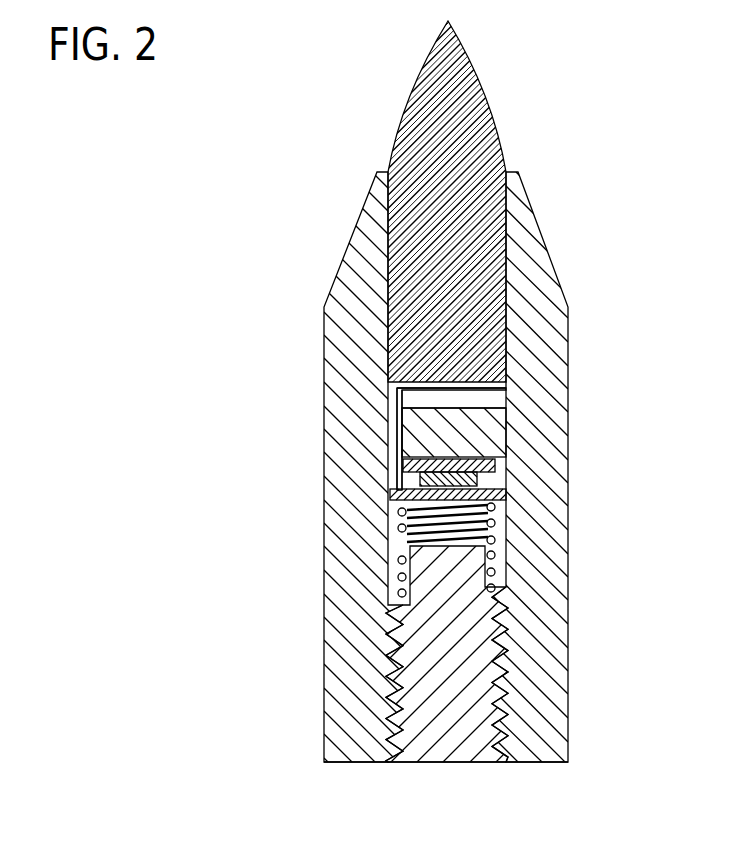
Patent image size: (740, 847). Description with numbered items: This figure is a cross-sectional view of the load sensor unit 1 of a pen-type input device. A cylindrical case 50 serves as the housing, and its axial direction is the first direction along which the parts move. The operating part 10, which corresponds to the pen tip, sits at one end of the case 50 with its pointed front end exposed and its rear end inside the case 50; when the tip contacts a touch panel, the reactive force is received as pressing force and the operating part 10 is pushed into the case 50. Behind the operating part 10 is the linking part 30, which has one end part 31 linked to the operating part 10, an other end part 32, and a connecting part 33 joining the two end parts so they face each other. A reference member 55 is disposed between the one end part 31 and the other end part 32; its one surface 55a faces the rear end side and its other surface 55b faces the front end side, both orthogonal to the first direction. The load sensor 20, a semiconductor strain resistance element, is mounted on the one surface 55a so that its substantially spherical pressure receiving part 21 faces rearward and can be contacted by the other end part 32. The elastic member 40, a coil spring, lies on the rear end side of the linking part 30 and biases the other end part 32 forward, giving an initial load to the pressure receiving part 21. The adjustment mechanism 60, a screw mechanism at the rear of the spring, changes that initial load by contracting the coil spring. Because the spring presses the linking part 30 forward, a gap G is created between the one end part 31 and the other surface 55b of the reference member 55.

The load sensor unit 1 is at (608, 104).
The operating part 10 is at (473, 94).
The load sensor 20 is at (467, 480).
The pressure receiving part 21 is at (478, 506).
The linking part 30 is at (387, 425).
The one end part 31 is at (458, 383).
The other end part 32 is at (413, 505).
The connecting part 33 is at (413, 462).
The elastic member 40 is at (493, 542).
The case 50 is at (530, 242).
The reference member 55 is at (477, 442).
The one surface 55a is at (413, 466).
The other surface 55b is at (455, 396).
The adjustment mechanism 60 is at (462, 744).
The gap G is at (495, 405).